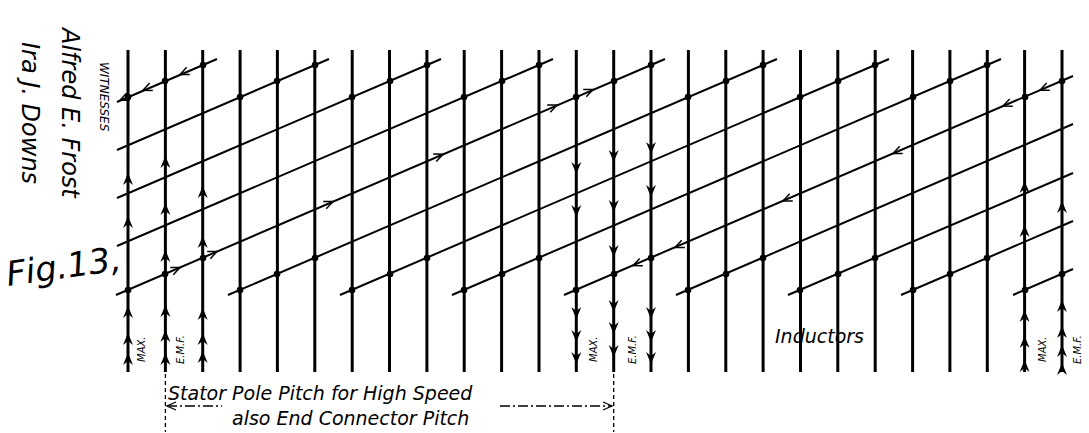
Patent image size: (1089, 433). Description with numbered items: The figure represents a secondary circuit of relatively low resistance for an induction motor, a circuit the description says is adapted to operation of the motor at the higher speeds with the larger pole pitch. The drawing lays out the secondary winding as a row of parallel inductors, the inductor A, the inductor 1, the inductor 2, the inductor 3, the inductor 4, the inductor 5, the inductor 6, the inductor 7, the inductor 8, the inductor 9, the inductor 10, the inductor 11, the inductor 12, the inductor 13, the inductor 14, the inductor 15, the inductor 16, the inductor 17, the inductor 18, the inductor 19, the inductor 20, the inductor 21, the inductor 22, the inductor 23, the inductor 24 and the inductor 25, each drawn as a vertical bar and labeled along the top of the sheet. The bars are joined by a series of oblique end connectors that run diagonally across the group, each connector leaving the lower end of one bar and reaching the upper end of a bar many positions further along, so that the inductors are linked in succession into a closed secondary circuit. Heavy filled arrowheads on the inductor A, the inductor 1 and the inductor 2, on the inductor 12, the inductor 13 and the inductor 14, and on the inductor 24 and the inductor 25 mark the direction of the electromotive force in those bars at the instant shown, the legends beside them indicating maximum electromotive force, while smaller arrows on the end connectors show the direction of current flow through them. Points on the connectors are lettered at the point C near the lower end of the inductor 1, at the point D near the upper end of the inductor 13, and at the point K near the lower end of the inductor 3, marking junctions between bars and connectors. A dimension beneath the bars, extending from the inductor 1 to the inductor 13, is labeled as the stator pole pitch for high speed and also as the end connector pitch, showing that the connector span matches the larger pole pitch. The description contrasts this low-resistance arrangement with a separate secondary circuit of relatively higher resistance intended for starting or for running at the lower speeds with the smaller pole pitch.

The inductor A is at (128, 201).
The inductor 1 is at (165, 201).
The inductor 2 is at (203, 201).
The inductor 3 is at (240, 201).
The inductor 4 is at (277, 201).
The inductor 5 is at (315, 201).
The inductor 6 is at (352, 201).
The inductor 7 is at (390, 201).
The inductor 8 is at (427, 201).
The inductor 9 is at (464, 201).
The inductor 10 is at (503, 201).
The inductor 11 is at (540, 201).
The inductor 12 is at (577, 201).
The inductor 13 is at (615, 201).
The inductor 14 is at (652, 201).
The inductor 15 is at (689, 201).
The inductor 16 is at (727, 201).
The inductor 17 is at (764, 201).
The inductor 18 is at (802, 201).
The inductor 19 is at (839, 201).
The inductor 20 is at (876, 201).
The inductor 21 is at (914, 201).
The inductor 22 is at (951, 201).
The inductor 23 is at (988, 201).
The inductor 24 is at (1026, 201).
The inductor 25 is at (1063, 203).
The connection point C is at (173, 284).
The connection point D is at (622, 91).
The connection point K is at (248, 298).